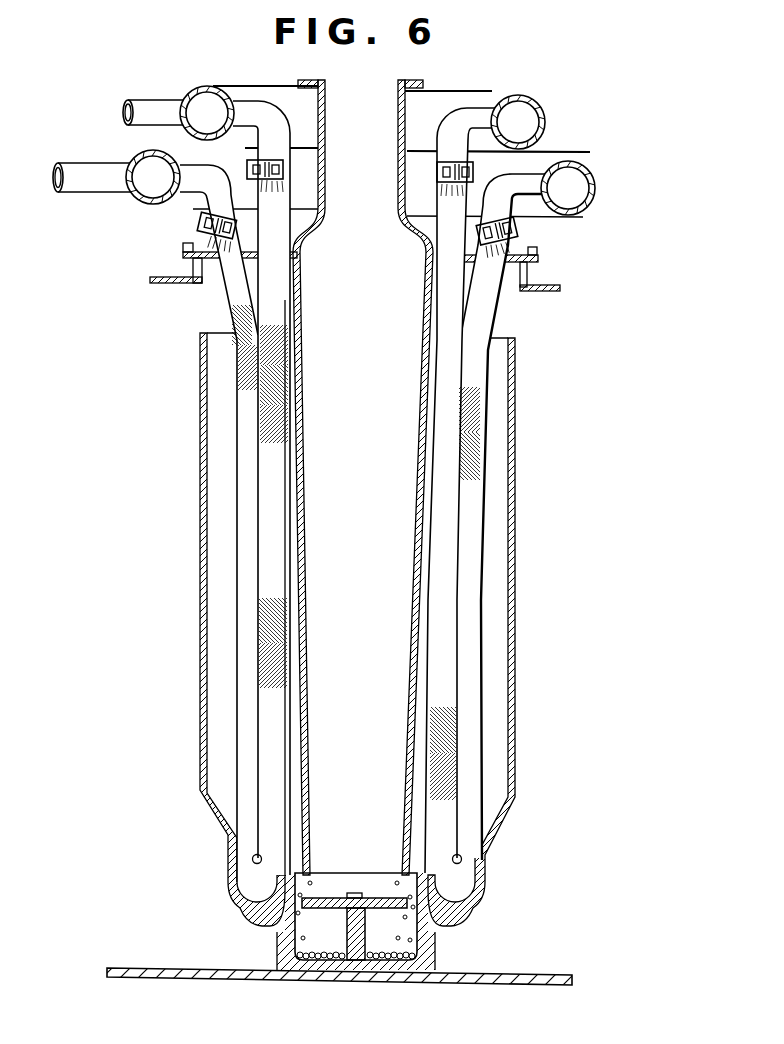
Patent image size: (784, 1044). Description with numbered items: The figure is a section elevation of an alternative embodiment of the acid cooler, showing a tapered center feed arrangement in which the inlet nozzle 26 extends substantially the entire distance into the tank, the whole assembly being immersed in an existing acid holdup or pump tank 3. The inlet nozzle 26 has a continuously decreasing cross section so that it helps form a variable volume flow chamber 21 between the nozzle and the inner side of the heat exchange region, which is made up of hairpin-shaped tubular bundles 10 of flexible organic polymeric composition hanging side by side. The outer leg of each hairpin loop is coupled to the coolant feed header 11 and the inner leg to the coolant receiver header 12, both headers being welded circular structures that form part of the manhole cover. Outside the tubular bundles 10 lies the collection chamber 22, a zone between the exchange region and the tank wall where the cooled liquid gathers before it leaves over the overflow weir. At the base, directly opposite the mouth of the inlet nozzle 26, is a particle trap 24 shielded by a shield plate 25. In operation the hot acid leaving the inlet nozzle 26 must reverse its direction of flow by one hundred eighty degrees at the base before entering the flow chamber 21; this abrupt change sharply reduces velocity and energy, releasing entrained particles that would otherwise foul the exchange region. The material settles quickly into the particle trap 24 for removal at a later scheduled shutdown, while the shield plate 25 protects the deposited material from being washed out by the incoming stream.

The pump tank 3 is at (167, 275).
The hairpin-shaped tubular bundle 10 is at (231, 292).
The coolant feed header 11 is at (124, 176).
The coolant receiver header 12 is at (200, 87).
The flow chamber 21 is at (288, 657).
The collection chamber 22 is at (222, 717).
The particle trap 24 is at (300, 927).
The shield plate 25 is at (320, 898).
The inlet nozzle 26 is at (303, 484).